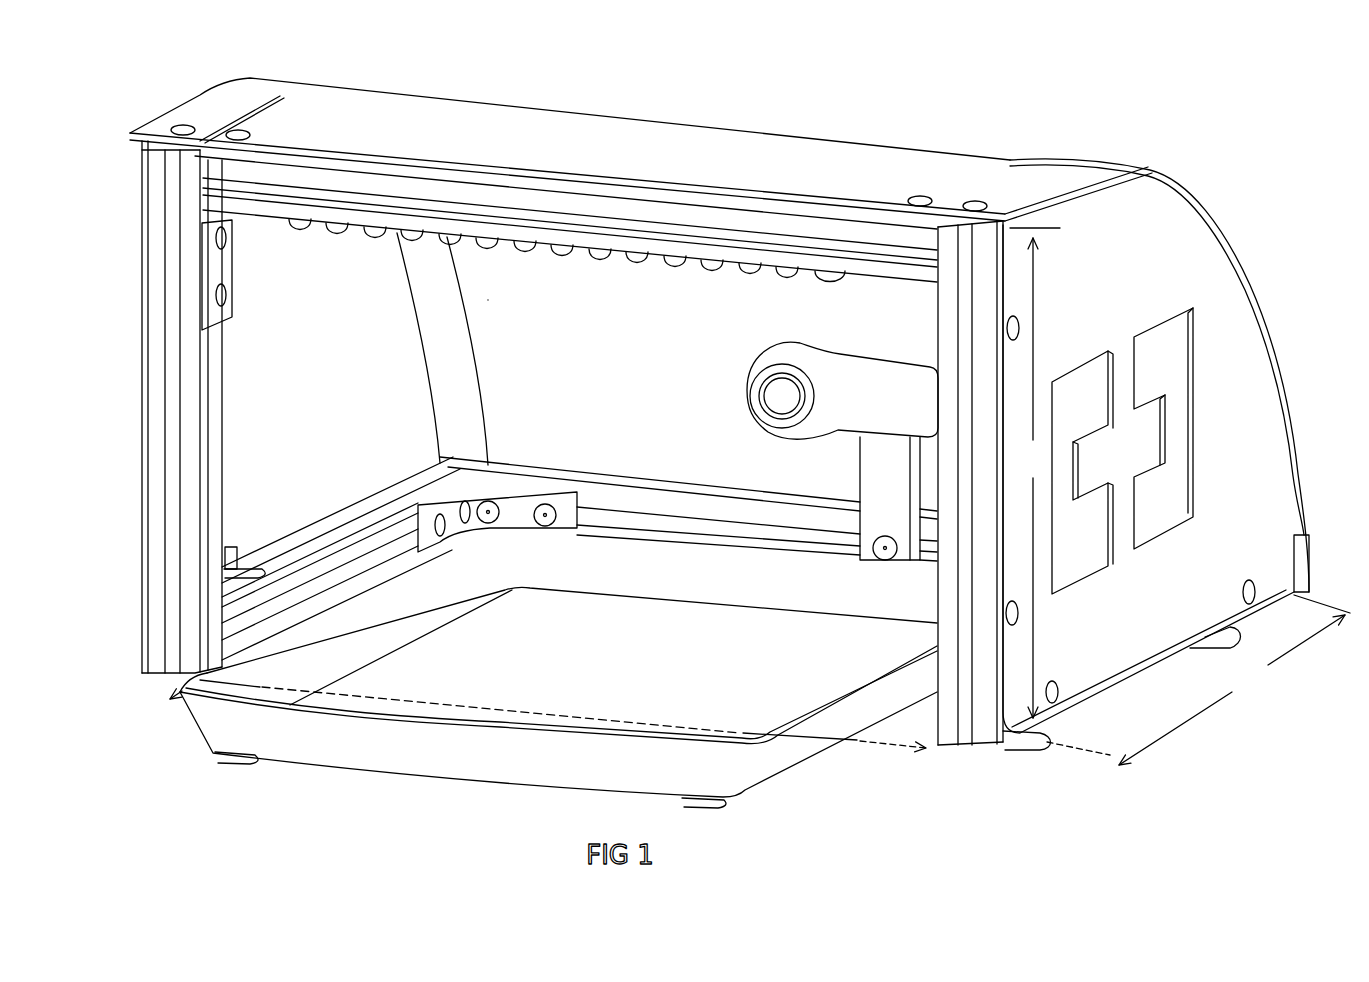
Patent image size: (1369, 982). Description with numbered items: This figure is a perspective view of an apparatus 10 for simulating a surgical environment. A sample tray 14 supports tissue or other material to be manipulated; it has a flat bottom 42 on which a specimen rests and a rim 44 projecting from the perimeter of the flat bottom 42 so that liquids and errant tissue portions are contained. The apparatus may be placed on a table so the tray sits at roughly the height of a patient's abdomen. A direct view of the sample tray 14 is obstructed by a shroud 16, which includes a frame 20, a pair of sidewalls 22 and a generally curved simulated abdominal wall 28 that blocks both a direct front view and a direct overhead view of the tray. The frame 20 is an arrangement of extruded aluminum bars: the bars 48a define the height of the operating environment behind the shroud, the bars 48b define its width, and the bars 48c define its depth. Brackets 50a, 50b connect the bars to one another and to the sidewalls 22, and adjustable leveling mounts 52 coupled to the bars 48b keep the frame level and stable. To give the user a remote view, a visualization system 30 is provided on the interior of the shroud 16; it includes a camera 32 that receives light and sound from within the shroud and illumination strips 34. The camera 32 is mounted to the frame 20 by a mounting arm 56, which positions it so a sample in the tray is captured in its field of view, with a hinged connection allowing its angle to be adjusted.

The apparatus 10 is at (1130, 104).
The sample tray 14 is at (172, 727).
The shroud 16 is at (109, 617).
The frame 20 is at (128, 482).
The sidewalls 22 is at (292, 441).
The simulated abdominal wall 28 is at (566, 391).
The visualization system 30 is at (846, 334).
The camera 32 is at (848, 413).
The illumination strips 34 is at (553, 267).
The flat bottom 42 is at (583, 681).
The rim 44 is at (528, 778).
The extruded aluminum bars 48a is at (157, 218).
The extruded aluminum bars 48b is at (277, 177).
The extruded aluminum bars 48c is at (331, 550).
The bracket 50a is at (227, 275).
The bracket 50b is at (232, 547).
The adjustable leveling mounts 52 is at (1032, 737).
The mounting arm 56 is at (896, 500).